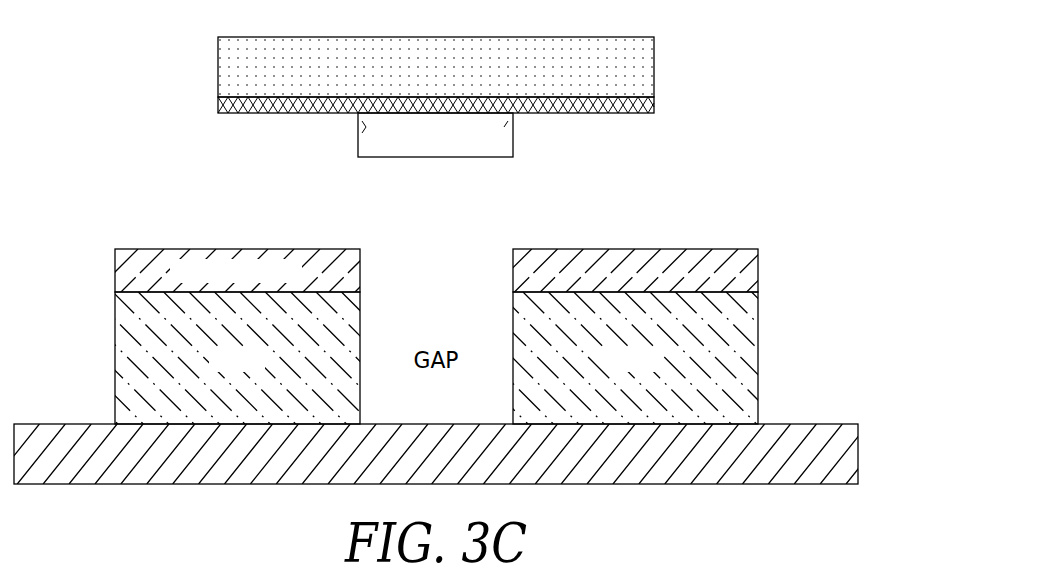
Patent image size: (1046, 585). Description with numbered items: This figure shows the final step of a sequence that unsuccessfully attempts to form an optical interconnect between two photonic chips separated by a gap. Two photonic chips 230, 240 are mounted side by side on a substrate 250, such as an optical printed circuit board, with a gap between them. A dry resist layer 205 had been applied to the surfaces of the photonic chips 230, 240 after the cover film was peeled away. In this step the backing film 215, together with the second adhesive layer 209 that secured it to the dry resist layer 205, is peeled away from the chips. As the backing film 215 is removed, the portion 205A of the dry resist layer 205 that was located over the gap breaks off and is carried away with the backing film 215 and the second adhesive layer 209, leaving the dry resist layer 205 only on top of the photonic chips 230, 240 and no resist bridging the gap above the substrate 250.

The backing film 215 is at (230, 68).
The second adhesive layer 209 is at (222, 104).
The portion of the dry resist layer 205A is at (485, 157).
The dry resist layer 205 is at (125, 268).
The photonic chip 230 is at (122, 358).
The photonic chip 240 is at (745, 363).
The substrate 250 is at (848, 450).